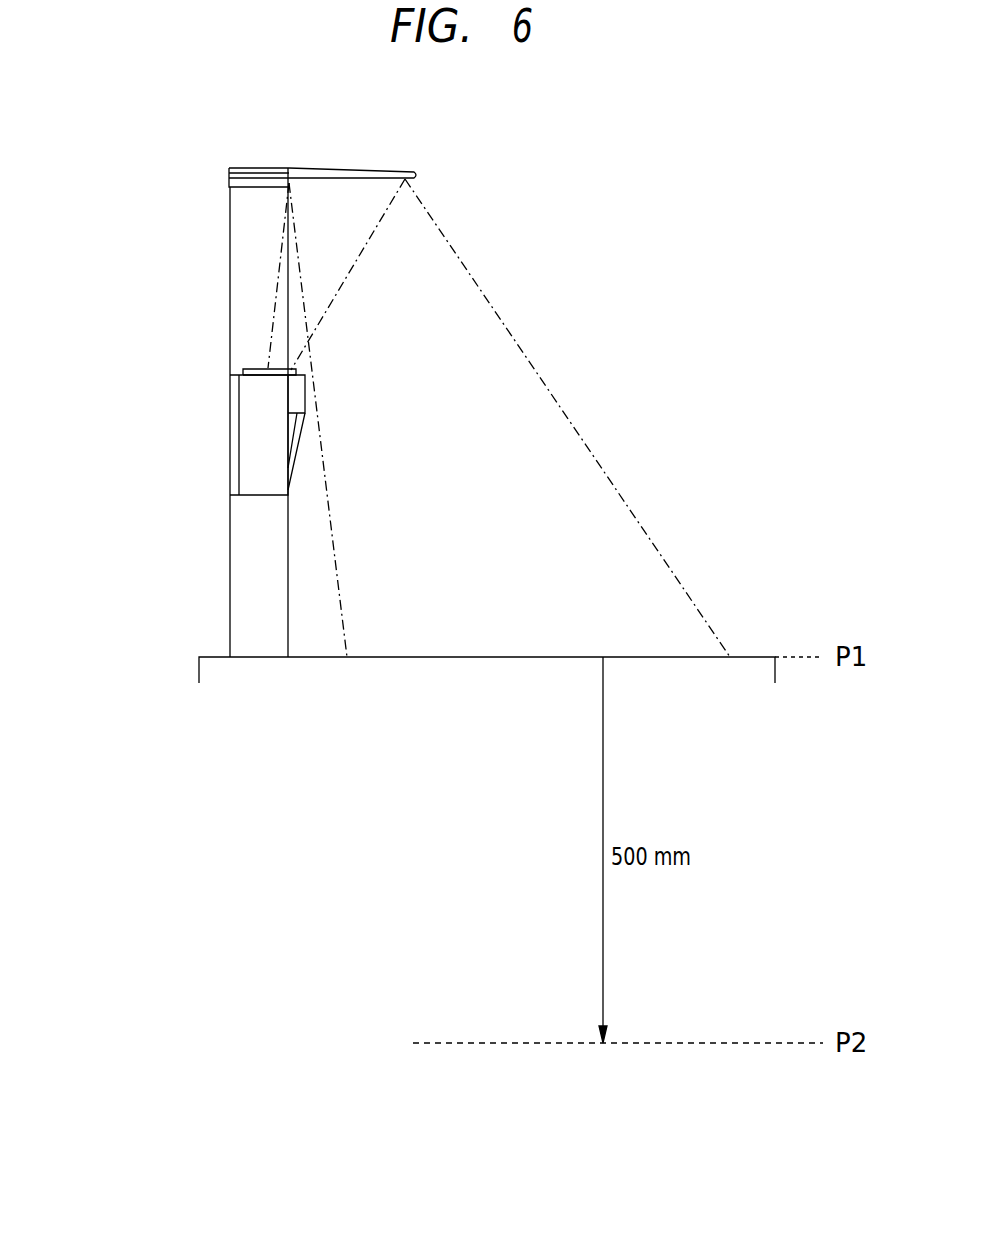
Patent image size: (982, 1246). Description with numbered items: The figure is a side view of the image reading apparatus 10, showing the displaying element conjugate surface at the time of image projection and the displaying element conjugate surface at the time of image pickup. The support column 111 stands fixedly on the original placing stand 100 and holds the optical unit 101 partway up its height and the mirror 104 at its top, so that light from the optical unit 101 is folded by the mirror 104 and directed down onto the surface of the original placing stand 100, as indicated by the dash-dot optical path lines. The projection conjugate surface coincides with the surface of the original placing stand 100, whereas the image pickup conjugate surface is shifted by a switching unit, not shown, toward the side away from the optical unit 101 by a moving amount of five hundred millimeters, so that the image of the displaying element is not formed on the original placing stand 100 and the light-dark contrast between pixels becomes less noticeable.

The image reading apparatus 10 is at (583, 298).
The original placing stand 100 is at (210, 677).
The optical unit 101 is at (257, 437).
The mirror 104 is at (353, 170).
The support column 111 is at (245, 576).